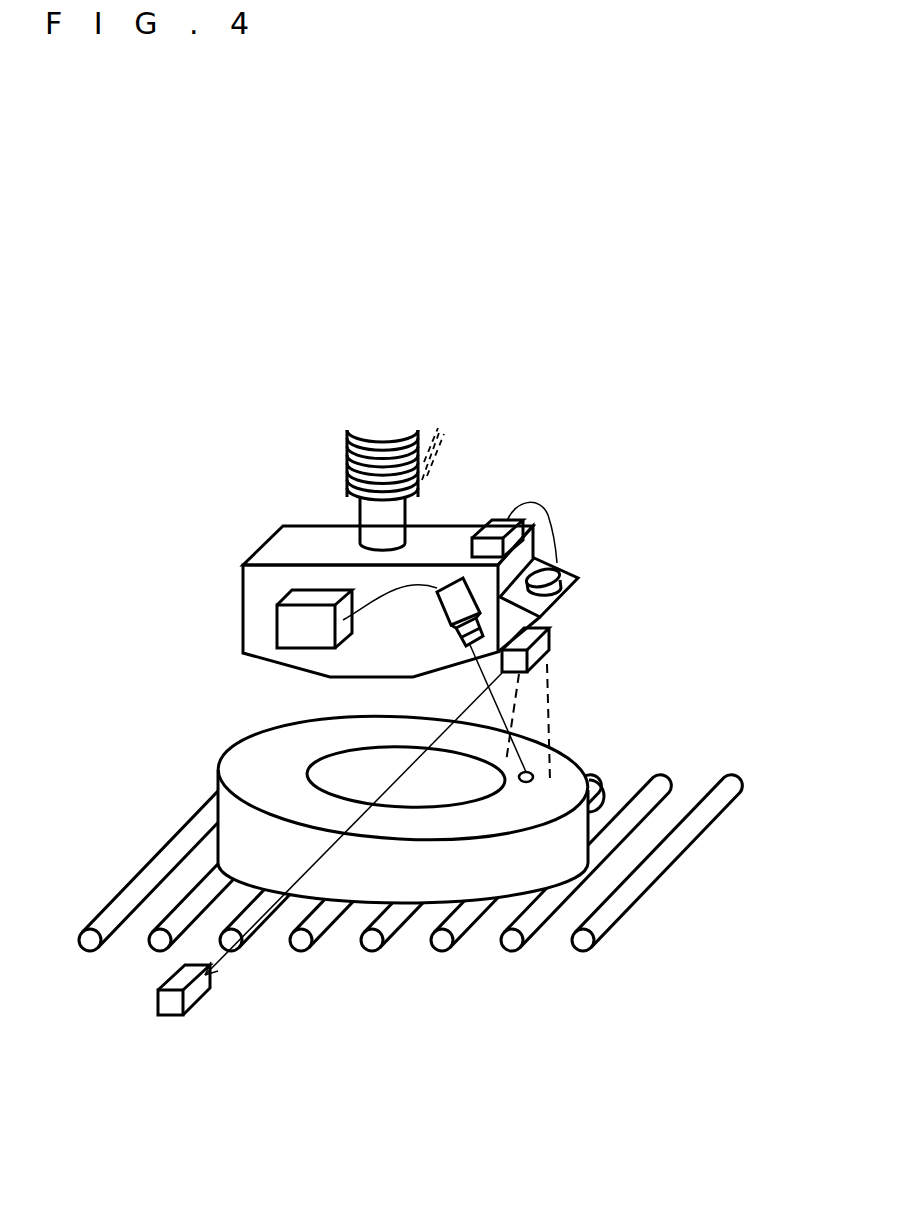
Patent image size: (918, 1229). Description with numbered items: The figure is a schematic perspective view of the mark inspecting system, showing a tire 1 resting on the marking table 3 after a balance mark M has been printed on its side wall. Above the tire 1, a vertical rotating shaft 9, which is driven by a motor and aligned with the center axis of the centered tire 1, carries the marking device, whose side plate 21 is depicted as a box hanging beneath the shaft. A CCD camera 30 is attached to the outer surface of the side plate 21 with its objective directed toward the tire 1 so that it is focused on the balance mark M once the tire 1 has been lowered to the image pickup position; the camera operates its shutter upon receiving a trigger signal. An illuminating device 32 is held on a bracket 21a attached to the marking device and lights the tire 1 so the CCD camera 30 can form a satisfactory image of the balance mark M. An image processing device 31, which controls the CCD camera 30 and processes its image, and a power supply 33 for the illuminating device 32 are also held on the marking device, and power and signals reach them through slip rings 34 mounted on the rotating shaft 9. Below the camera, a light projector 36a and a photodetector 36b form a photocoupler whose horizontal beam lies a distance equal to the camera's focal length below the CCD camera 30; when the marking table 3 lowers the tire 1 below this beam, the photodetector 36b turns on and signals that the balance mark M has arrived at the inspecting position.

The tire 1 is at (267, 763).
The marking table 3 is at (680, 868).
The rotating shaft 9 is at (370, 517).
The side plate 21 is at (262, 597).
The bracket 21a is at (576, 574).
The CCD camera 30 is at (437, 613).
The image processing device 31 is at (293, 628).
The illuminating device 32 is at (556, 567).
The power supply 33 is at (495, 526).
The slip rings 34 is at (348, 462).
The light projector 36a is at (553, 632).
The photodetector 36b is at (192, 1007).
The balance mark M is at (535, 768).